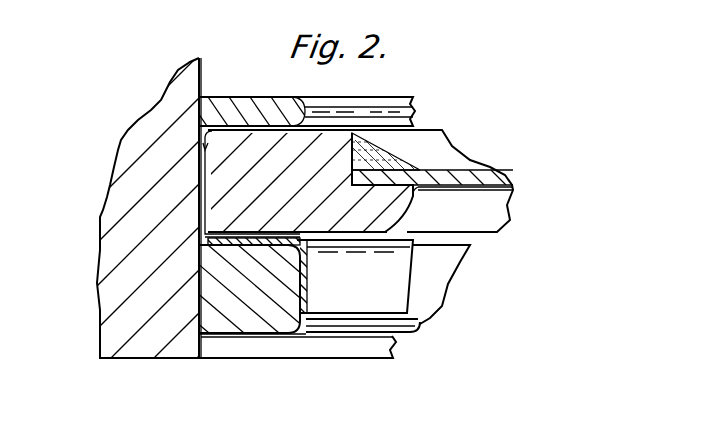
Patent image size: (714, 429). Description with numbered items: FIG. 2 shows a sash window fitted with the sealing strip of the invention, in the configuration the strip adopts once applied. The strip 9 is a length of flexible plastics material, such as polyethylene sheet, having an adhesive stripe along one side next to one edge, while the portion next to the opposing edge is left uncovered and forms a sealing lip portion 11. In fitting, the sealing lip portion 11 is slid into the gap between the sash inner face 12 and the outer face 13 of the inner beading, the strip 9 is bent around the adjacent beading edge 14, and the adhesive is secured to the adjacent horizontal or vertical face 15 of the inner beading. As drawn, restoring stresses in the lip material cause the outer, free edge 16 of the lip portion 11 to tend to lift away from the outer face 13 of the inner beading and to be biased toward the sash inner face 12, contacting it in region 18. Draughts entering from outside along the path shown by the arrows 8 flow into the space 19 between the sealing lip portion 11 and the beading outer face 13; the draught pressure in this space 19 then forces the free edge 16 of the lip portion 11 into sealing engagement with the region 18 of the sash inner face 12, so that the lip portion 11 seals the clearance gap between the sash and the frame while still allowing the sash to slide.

The arrows 8 is at (318, 126).
The strip 9 is at (316, 275).
The sealing lip portion 11 is at (238, 244).
The sash inner face 12 is at (320, 234).
The outer face of the inner beading 13 is at (248, 246).
The beading edge 14 is at (288, 262).
The face of the inner beading 15 is at (418, 311).
The free edge 16 is at (206, 242).
The region 18 is at (208, 232).
The space 19 is at (195, 306).